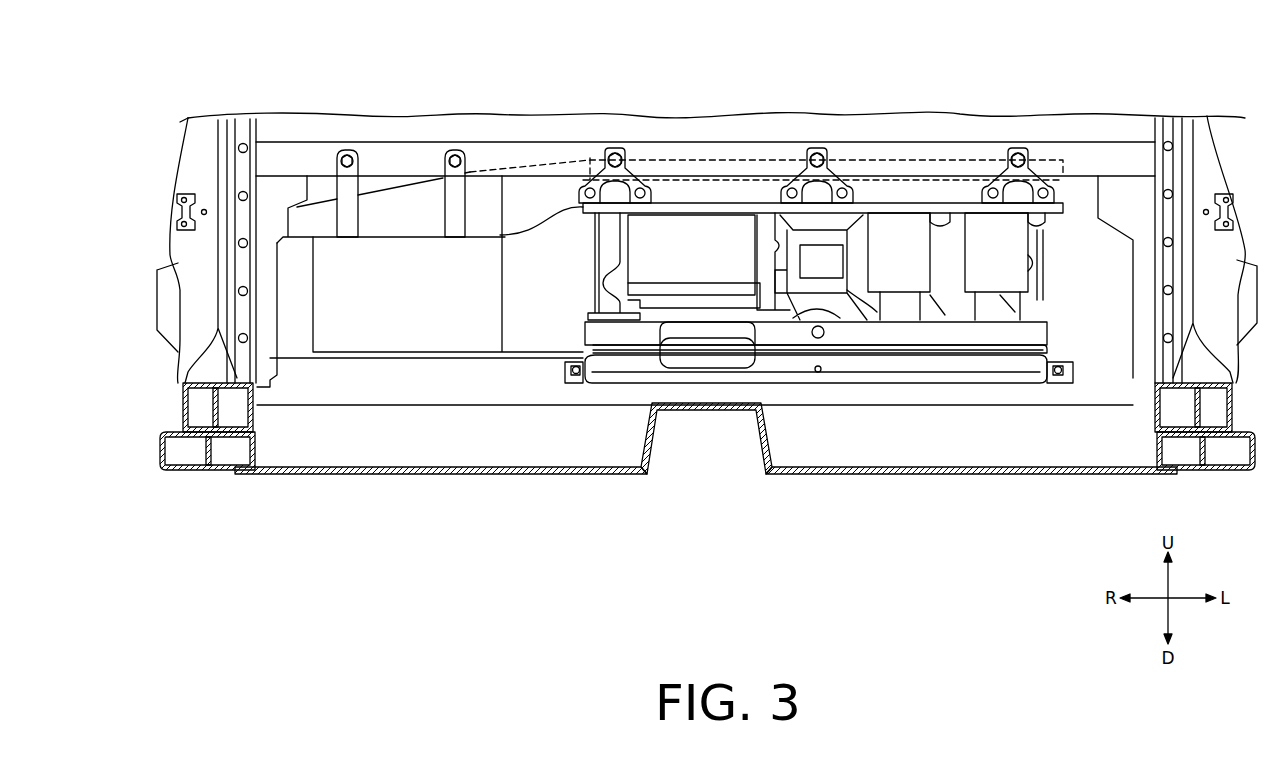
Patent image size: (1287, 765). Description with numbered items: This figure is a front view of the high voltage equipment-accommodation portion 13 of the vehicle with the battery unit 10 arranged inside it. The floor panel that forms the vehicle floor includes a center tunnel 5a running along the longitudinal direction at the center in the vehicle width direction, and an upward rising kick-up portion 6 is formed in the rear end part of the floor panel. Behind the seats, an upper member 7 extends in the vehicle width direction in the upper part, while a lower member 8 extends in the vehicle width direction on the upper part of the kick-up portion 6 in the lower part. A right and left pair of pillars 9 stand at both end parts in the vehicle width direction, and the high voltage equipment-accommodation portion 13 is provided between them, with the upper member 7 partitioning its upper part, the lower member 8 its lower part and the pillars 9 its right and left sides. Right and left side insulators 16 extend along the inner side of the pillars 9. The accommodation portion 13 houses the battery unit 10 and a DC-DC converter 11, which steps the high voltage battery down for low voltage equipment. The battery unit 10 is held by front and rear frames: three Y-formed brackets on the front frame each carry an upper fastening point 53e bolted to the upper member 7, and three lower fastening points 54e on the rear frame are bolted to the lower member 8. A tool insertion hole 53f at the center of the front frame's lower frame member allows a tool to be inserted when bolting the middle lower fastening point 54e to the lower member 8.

The center tunnel 5a is at (648, 440).
The kick-up portion 6 is at (438, 442).
The upper member 7 is at (492, 135).
The lower member 8 is at (283, 378).
The pillars 9 is at (222, 130).
The battery unit 10 is at (1043, 252).
The DC-DC converter 11 is at (372, 338).
The high voltage equipment-accommodation portion 13 is at (535, 334).
The side insulators 16 is at (280, 168).
The upper fastening point 53e is at (620, 140).
The tool insertion hole 53f is at (824, 334).
The lower fastening point 54e is at (578, 383).